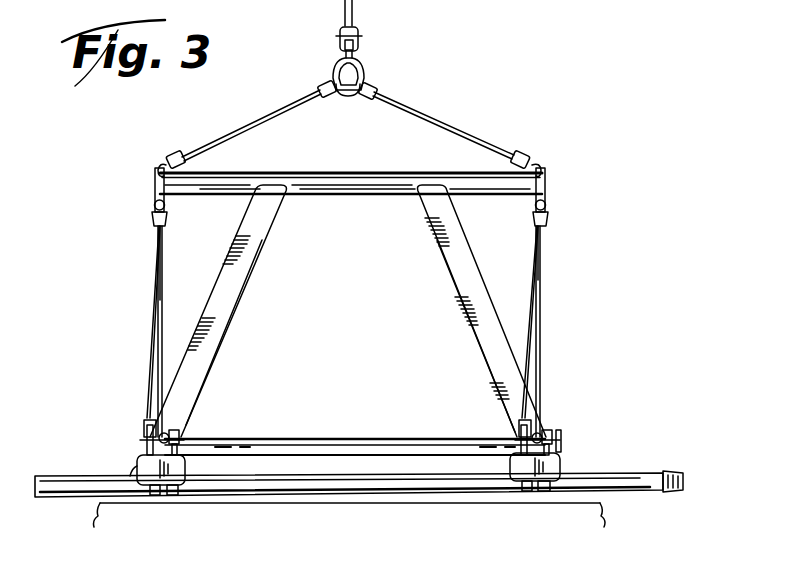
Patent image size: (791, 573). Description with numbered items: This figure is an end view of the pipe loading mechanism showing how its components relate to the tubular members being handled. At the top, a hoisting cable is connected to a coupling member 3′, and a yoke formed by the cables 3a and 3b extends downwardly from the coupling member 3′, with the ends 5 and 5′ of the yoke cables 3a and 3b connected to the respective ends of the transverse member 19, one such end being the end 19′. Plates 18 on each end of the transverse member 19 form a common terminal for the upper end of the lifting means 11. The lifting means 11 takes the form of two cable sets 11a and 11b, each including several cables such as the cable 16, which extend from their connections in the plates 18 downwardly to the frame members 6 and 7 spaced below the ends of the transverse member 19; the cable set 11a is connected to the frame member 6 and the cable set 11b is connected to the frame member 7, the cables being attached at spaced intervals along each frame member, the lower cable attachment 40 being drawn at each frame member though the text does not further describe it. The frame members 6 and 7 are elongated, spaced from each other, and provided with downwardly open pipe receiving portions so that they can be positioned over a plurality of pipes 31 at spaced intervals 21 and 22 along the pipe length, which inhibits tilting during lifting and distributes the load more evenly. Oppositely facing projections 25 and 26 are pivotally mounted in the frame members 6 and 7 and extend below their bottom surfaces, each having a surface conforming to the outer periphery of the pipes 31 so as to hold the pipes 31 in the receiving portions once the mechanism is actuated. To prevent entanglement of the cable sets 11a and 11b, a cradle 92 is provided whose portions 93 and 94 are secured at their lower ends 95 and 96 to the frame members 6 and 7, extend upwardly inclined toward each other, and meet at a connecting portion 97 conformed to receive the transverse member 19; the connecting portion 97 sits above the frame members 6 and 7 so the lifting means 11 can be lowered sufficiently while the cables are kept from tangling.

The coupling member 3′ is at (362, 78).
The yoke cable 3a is at (262, 116).
The yoke cable 3b is at (432, 118).
The end of yoke cable 5 is at (162, 171).
The end of yoke cable 5′ is at (542, 167).
The end of transverse member 19′ is at (546, 178).
The plates 18 is at (152, 208).
The transverse member 19 is at (475, 196).
The connecting portion 97 is at (348, 204).
The cradle 92 is at (259, 290).
The cradle portion 94 is at (203, 366).
The cradle portion 93 is at (466, 322).
The lower end of cradle portion 95 is at (514, 436).
The lifting means 11 is at (152, 331).
The cable set 11b is at (159, 316).
The cable set 11a is at (541, 274).
The cable 16 is at (152, 392).
The connecting fitting 40 is at (141, 448).
The lower end of cradle portion 96 is at (184, 441).
The frame member 7 is at (182, 468).
The spaced interval 22 is at (134, 478).
The frame member 6 is at (556, 462).
The projection 25 is at (154, 500).
The projection 26 is at (176, 503).
The pipes 31 is at (624, 491).
The spaced interval 21 is at (557, 485).